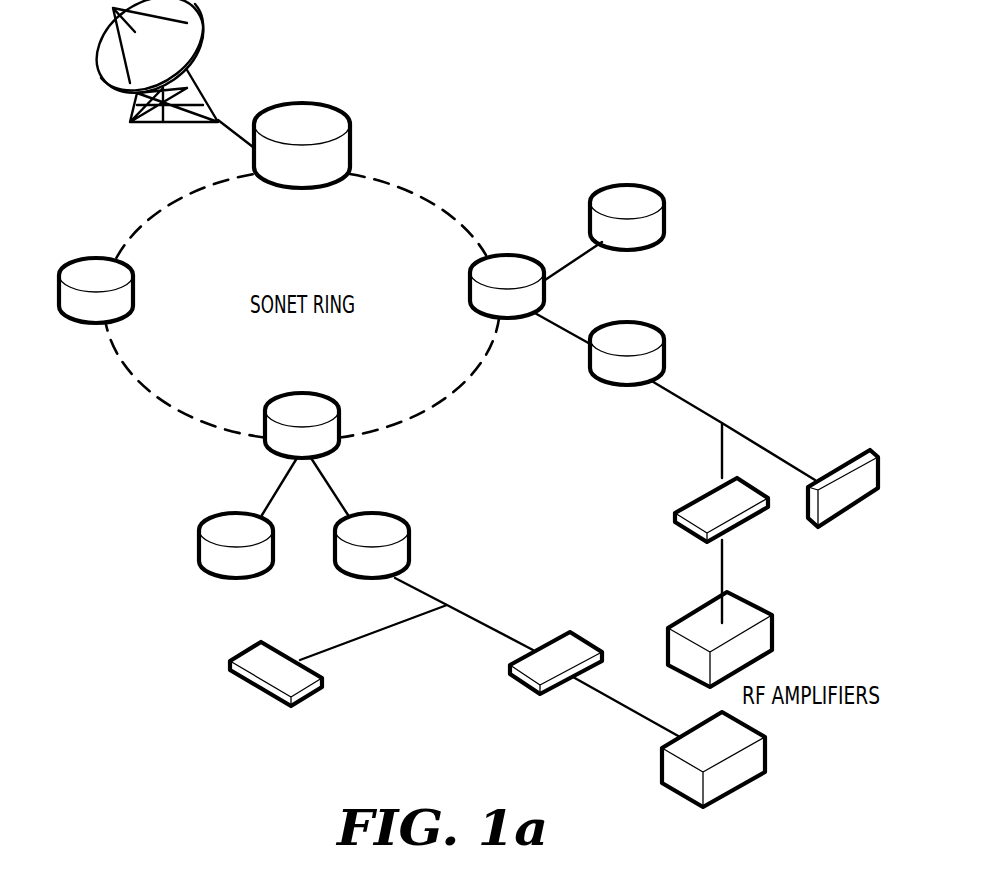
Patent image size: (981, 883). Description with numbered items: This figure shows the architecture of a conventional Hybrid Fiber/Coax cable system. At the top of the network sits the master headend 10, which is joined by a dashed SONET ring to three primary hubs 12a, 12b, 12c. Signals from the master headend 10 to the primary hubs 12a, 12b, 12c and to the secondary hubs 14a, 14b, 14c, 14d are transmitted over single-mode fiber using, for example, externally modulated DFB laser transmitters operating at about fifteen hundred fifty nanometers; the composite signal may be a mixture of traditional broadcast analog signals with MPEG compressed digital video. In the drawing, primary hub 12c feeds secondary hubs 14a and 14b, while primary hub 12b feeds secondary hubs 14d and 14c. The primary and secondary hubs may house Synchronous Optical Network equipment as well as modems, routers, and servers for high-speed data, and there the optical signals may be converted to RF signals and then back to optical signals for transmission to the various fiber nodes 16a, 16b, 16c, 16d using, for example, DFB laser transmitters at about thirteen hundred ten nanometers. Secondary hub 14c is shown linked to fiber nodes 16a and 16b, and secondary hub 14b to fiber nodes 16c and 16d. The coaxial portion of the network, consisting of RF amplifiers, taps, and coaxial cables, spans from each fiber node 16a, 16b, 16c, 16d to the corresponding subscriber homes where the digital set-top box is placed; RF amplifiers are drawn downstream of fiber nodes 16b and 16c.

The master headend 10 is at (334, 116).
The primary hub 12a is at (68, 268).
The primary hub 12b is at (328, 397).
The primary hub 12c is at (480, 268).
The secondary hub 14a is at (637, 193).
The secondary hub 14b is at (657, 357).
The secondary hub 14c is at (400, 552).
The secondary hub 14d is at (205, 552).
The fiber node 16a is at (245, 658).
The fiber node 16b is at (568, 645).
The fiber node 16c is at (708, 508).
The fiber node 16d is at (862, 458).